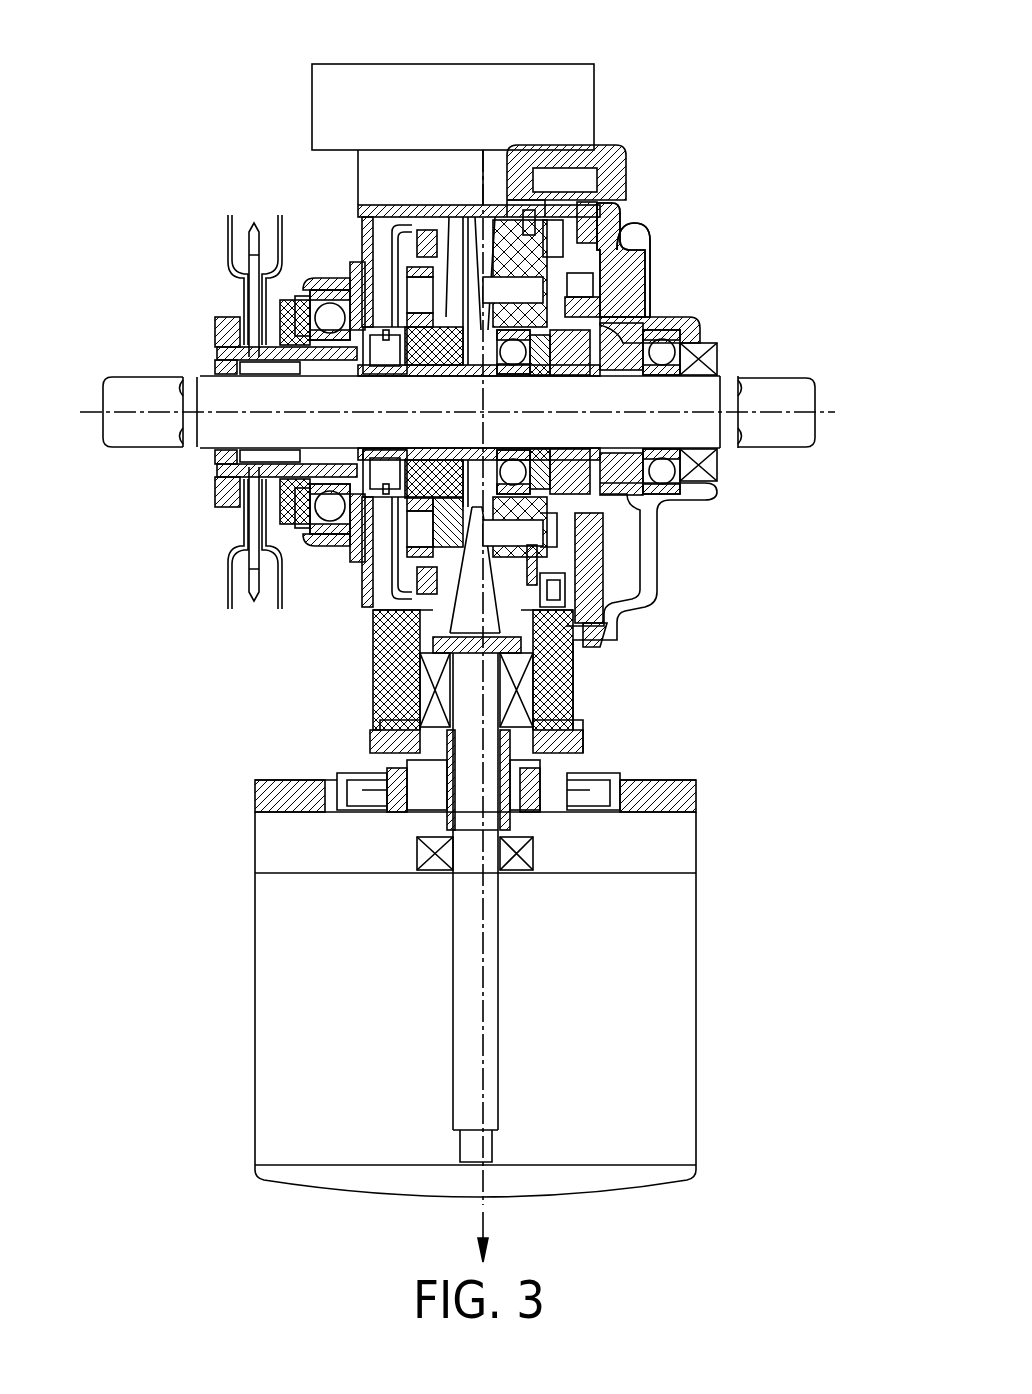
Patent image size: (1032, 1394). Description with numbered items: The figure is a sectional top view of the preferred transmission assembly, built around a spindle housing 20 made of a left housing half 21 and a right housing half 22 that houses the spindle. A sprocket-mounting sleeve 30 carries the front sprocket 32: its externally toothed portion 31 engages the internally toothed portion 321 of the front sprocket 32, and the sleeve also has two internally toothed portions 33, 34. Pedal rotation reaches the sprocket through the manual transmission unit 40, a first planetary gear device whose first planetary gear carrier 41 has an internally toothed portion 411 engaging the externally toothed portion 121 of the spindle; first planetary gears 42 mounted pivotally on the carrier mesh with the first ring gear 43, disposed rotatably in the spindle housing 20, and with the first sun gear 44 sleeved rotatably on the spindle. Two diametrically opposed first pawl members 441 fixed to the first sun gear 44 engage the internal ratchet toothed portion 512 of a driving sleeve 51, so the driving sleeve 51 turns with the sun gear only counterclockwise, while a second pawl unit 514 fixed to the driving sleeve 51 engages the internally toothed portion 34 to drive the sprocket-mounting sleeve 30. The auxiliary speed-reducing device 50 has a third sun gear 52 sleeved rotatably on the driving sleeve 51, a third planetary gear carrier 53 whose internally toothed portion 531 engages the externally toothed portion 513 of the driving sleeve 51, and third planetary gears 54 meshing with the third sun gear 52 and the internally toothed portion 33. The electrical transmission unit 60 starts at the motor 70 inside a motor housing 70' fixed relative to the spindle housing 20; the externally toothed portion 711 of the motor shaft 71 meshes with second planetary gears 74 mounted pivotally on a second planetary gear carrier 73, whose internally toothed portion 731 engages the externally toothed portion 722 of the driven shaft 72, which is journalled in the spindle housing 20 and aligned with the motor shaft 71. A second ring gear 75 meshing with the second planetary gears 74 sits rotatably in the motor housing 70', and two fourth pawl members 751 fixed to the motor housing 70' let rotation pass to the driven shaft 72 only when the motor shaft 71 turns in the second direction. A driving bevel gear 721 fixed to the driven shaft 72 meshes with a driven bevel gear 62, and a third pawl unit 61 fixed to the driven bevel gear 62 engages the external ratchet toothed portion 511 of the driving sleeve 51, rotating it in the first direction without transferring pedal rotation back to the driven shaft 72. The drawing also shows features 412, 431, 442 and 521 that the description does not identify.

The spindle housing 20 is at (628, 132).
The left housing half 21 is at (330, 278).
The right housing half 22 is at (660, 545).
The sprocket-mounting sleeve 30 is at (285, 320).
The externally toothed portion 31 is at (220, 352).
The front sprocket 32 is at (253, 248).
The internally toothed portion 33 is at (427, 228).
The internally toothed portion 34 is at (352, 262).
The manual transmission unit 40 is at (640, 246).
The first planetary gear carrier 41 is at (648, 235).
The first planetary gears 42 is at (593, 288).
The first ring gear 43 is at (605, 230).
The first sun gear 44 is at (668, 340).
The auxiliary speed-reducing device 50 is at (388, 200).
The driving sleeve 51 is at (478, 300).
The third sun gear 52 is at (440, 520).
The third planetary gear carrier 53 is at (395, 497).
The third planetary gears 54 is at (448, 560).
The electrical transmission unit 60 is at (585, 548).
The third pawl unit 61 is at (578, 600).
The driven bevel gear 62 is at (607, 625).
The motor 70 is at (524, 1004).
The motor housing 70' is at (430, 801).
The motor shaft 71 is at (493, 797).
The driven shaft 72 is at (500, 665).
The second planetary gear carrier 73 is at (605, 790).
The second planetary gears 74 is at (545, 790).
The second ring gear 75 is at (390, 795).
The externally toothed portion 121 is at (640, 385).
The internally toothed portion 321 is at (250, 330).
The internally toothed portion 411 is at (700, 362).
The clutch lower portion 412 is at (612, 305).
The clutch stem 431 is at (600, 240).
The first pawl members 441 is at (660, 492).
The upper flange 442 is at (690, 330).
The external ratchet toothed portion 511 is at (520, 270).
The internal ratchet toothed portion 512 is at (530, 260).
The externally toothed portion 513 is at (405, 463).
The second pawl unit 514 is at (400, 463).
The roller assembly 521 is at (463, 270).
The internally toothed portion 531 is at (385, 317).
The externally toothed portion 711 is at (520, 830).
The driving bevel gear 721 is at (380, 745).
The externally toothed portion 722 is at (585, 748).
The internally toothed portion 731 is at (360, 775).
The fourth pawl members 751 is at (597, 797).